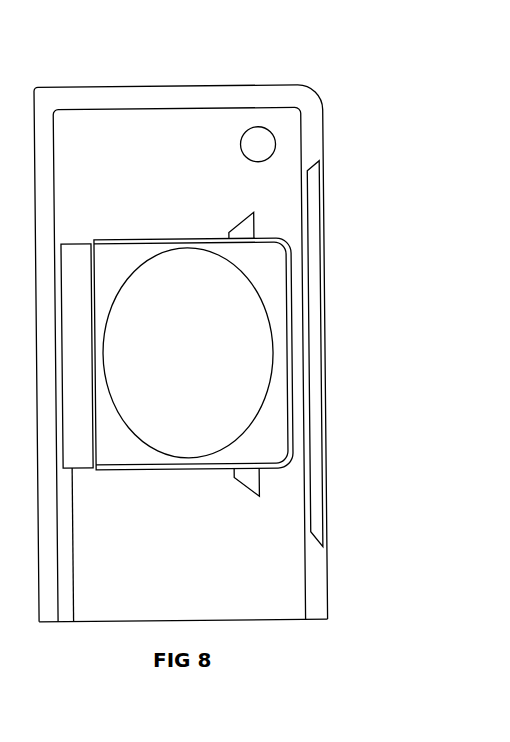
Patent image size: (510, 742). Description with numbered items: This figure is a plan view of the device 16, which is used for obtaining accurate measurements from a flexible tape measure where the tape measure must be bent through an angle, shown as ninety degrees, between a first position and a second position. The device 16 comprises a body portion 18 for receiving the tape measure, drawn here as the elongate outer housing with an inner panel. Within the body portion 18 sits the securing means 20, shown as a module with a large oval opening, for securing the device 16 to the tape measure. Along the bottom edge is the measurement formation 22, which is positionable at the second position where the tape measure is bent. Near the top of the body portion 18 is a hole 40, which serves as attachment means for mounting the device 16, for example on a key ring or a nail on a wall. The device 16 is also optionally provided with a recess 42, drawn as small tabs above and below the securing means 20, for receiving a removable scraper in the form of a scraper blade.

The device 16 is at (360, 108).
The body portion 18 is at (171, 560).
The securing means 20 is at (195, 363).
The measurement formation 22 is at (268, 620).
The hole 40 is at (260, 145).
The recess 42 is at (247, 231).